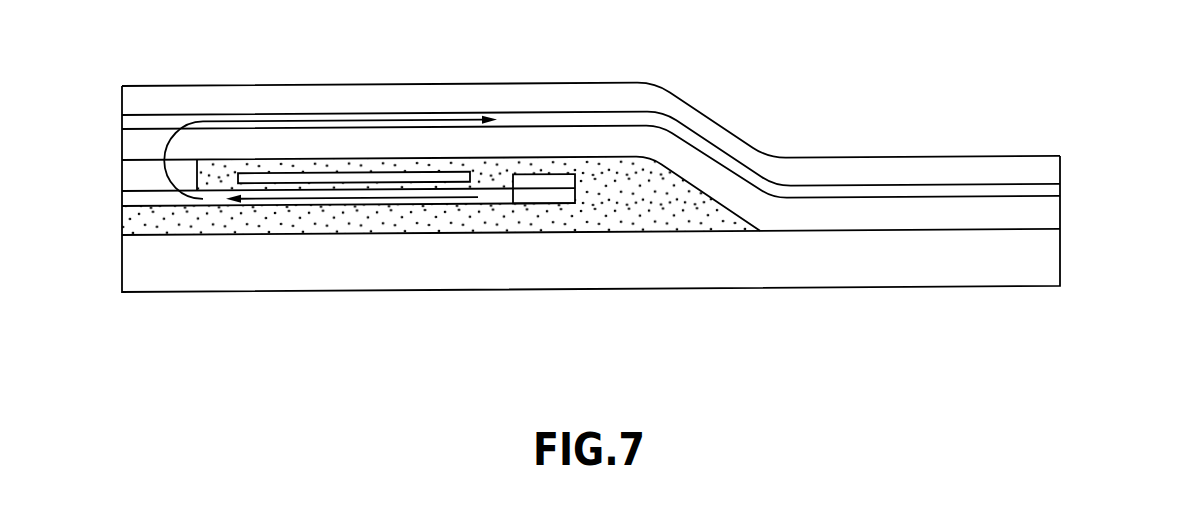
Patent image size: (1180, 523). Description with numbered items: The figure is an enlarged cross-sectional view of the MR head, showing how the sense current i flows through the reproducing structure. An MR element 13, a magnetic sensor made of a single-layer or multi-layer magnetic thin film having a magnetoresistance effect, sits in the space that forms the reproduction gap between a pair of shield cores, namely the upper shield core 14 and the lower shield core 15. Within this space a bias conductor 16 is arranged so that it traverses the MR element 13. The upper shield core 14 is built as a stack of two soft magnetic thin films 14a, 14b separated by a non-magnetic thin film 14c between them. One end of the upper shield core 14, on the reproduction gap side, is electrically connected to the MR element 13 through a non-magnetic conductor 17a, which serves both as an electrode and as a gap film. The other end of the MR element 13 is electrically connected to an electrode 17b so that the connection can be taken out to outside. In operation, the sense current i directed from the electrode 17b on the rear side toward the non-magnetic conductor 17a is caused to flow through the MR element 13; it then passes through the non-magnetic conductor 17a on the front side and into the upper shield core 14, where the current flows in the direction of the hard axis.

The MR element 13 is at (363, 206).
The upper shield core 14 is at (1139, 170).
The soft magnetic thin film 14a is at (1056, 175).
The soft magnetic thin film 14b is at (1056, 224).
The non-magnetic thin film 14c is at (1056, 200).
The lower shield core 15 is at (1050, 266).
The bias conductor 16 is at (277, 176).
The non-magnetic conductor 17a is at (155, 182).
The electrode 17b is at (533, 185).
The sense current i is at (333, 118).